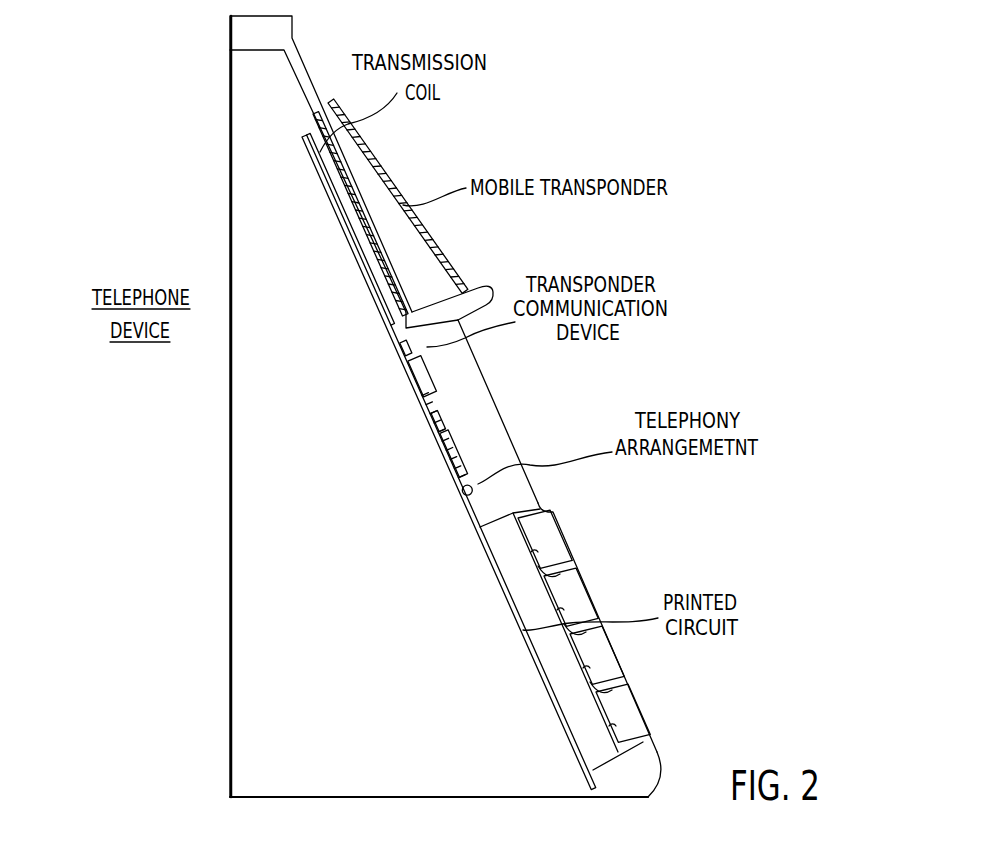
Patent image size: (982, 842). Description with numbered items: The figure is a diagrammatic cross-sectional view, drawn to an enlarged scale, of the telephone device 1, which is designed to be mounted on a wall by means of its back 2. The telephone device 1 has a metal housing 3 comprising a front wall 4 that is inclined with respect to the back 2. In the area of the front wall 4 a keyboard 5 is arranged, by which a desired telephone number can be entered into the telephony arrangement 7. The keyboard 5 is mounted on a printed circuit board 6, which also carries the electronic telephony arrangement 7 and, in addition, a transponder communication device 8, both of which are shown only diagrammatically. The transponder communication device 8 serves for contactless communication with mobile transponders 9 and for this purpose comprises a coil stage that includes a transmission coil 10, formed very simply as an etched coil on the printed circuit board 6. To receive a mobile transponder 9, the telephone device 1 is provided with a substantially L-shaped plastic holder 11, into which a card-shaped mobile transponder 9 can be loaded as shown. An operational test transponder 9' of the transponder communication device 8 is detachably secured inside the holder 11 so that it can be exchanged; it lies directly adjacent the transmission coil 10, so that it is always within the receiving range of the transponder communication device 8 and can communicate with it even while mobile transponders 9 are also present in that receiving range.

The telephone device 1 is at (545, 131).
The back 2 is at (230, 198).
The metal housing 3 is at (655, 757).
The front wall 4 is at (503, 410).
The keyboard 5 is at (575, 549).
The printed circuit board 6 is at (470, 523).
The telephony arrangement 7 is at (477, 467).
The transponder communication device 8 is at (432, 355).
The mobile transponder 9 is at (398, 196).
The operational test transponder 9' is at (330, 213).
The transmission coil 10 is at (352, 212).
The holder 11 is at (418, 305).